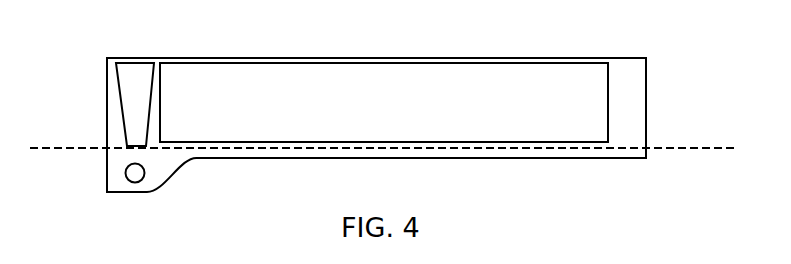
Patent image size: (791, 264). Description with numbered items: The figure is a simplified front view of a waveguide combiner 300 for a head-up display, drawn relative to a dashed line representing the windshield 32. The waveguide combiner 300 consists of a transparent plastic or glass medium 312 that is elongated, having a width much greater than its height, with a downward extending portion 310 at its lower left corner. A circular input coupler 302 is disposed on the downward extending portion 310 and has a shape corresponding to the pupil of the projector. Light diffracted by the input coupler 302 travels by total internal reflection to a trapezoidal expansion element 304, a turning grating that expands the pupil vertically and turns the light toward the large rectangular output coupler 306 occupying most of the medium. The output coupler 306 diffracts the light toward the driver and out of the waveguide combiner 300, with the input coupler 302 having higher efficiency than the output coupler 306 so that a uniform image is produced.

The waveguide combiner 300 is at (605, 58).
The input coupler 302 is at (133, 182).
The expansion element 304 is at (127, 70).
The output coupler 306 is at (338, 75).
The downward extending portion 310 is at (107, 178).
The transparent plastic or glass medium 312 is at (525, 58).
The windshield 32 is at (78, 148).